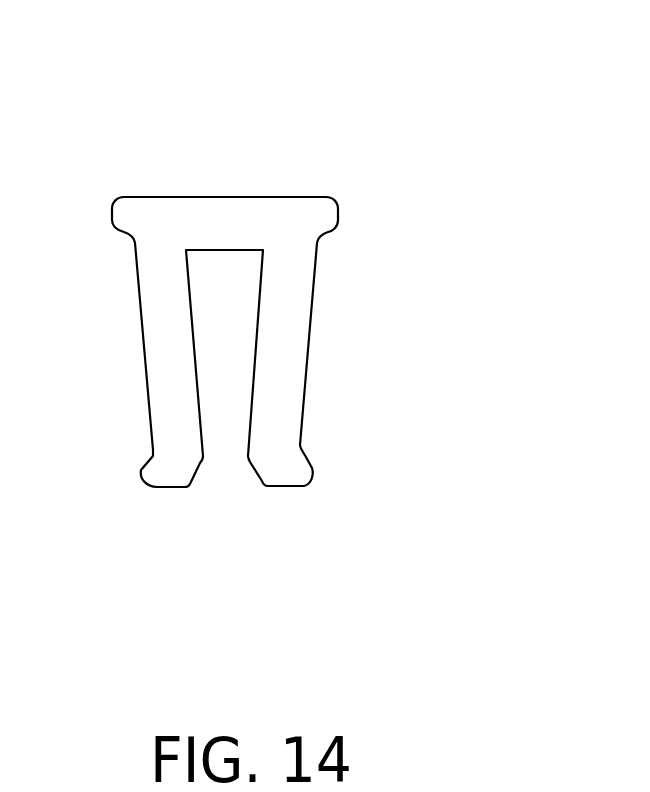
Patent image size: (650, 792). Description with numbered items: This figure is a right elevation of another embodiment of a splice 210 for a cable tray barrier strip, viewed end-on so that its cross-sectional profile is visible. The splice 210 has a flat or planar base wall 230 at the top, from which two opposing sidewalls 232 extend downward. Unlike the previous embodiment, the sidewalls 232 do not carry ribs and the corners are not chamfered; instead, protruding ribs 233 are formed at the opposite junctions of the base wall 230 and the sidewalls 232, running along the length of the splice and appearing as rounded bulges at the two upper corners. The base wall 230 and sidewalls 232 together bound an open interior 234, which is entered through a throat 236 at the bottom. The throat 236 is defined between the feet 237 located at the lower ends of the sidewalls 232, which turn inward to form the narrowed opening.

The splice 210 is at (501, 68).
The base wall 230 is at (157, 197).
The sidewalls 232 is at (152, 363).
The protruding ribs 233 is at (113, 213).
The open interior 234 is at (215, 293).
The throat 236 is at (254, 468).
The feet 237 is at (138, 470).